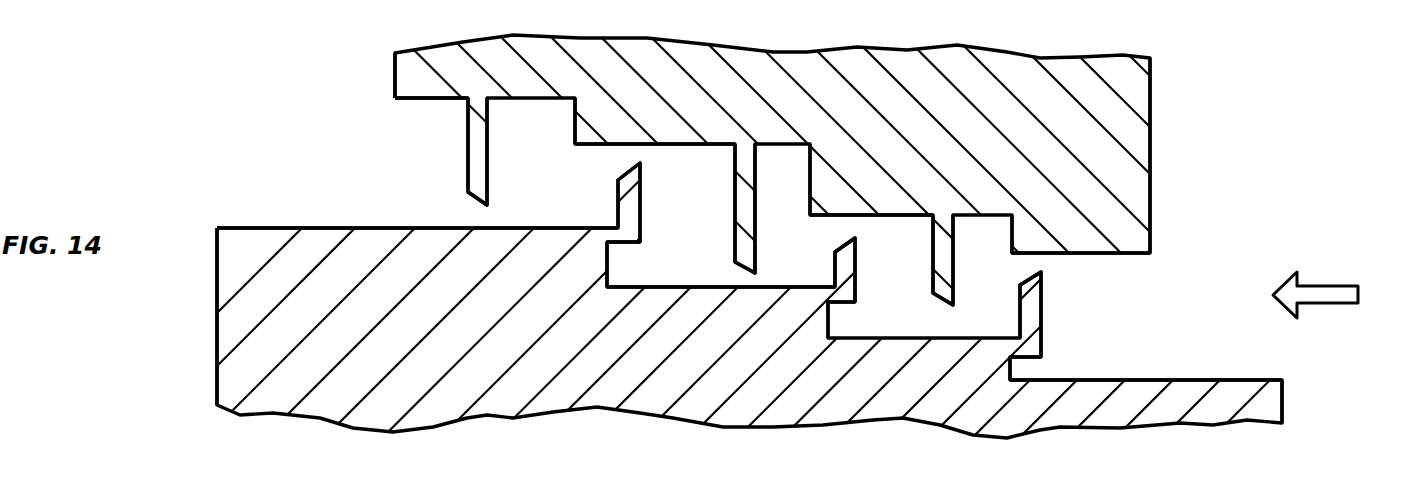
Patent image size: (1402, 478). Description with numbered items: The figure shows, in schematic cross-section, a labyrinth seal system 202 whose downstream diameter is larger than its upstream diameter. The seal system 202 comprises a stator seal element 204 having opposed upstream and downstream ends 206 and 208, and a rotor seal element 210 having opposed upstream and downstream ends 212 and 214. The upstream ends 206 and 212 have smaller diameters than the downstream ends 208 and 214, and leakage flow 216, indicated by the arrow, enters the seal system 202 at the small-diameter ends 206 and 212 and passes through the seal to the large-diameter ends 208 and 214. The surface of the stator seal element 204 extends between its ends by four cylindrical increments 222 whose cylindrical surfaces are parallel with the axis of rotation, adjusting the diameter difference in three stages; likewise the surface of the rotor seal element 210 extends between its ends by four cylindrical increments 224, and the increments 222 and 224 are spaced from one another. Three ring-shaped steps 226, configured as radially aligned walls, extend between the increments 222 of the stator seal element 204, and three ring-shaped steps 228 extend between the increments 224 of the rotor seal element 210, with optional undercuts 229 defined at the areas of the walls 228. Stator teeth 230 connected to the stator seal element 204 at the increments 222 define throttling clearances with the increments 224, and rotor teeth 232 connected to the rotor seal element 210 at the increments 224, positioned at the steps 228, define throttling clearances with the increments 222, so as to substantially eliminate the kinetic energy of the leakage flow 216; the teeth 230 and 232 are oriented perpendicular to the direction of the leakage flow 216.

The seal system 202 is at (240, 108).
The stator seal element 204 is at (470, 56).
The upstream end of stator seal element 206 is at (1152, 160).
The downstream end of stator seal element 208 is at (395, 80).
The rotor seal element 210 is at (247, 417).
The upstream end of rotor seal element 212 is at (1286, 394).
The downstream end of rotor seal element 214 is at (214, 373).
The leakage flow 216 is at (1320, 287).
The cylindrical increments of stator seal element 222 is at (424, 103).
The cylindrical increments of rotor seal element 224 is at (365, 228).
The ring-shaped steps of stator seal element 226 is at (572, 134).
The ring-shaped steps of rotor seal element 228 is at (648, 228).
The undercuts 229 is at (606, 273).
The stator teeth 230 is at (470, 184).
The rotor teeth 232 is at (616, 192).